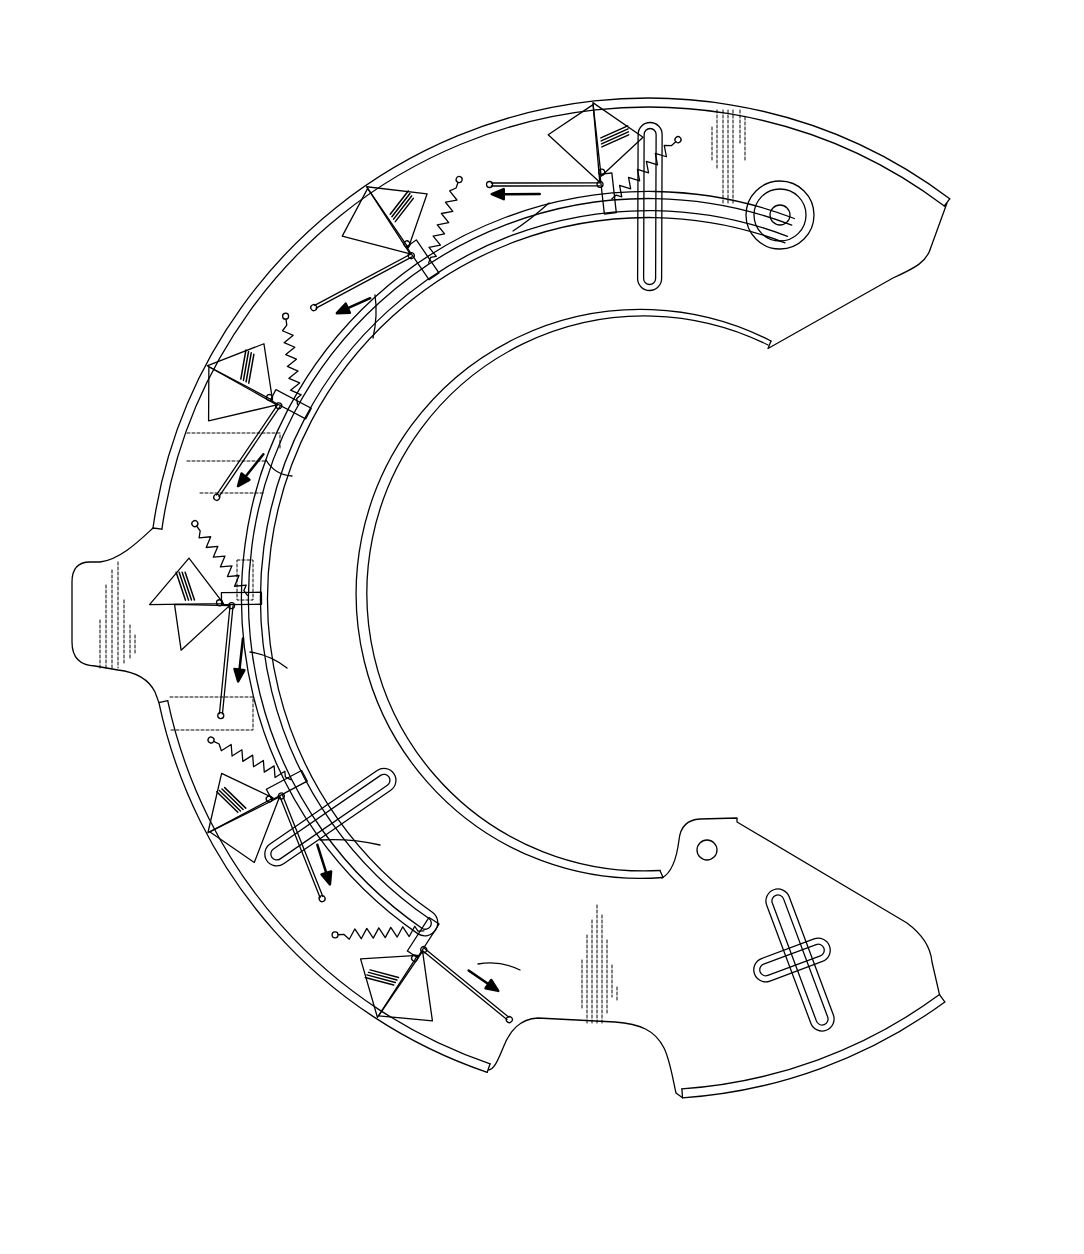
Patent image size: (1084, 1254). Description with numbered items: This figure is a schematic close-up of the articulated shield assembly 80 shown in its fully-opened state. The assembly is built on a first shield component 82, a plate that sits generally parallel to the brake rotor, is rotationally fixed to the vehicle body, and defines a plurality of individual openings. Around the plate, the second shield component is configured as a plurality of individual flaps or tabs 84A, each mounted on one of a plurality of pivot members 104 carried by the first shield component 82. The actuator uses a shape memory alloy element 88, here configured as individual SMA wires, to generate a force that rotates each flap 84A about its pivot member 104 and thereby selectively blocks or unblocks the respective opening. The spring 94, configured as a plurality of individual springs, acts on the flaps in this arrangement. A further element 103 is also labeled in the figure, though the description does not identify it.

The shield assembly 80 is at (766, 97).
The first shield component 82 is at (842, 163).
The individual flaps or tabs 84A is at (607, 123).
The shape memory alloy (SMA) element 88 is at (527, 181).
The spring 94 is at (674, 150).
The wedge block 103 is at (572, 147).
The pivot members 104 is at (598, 190).